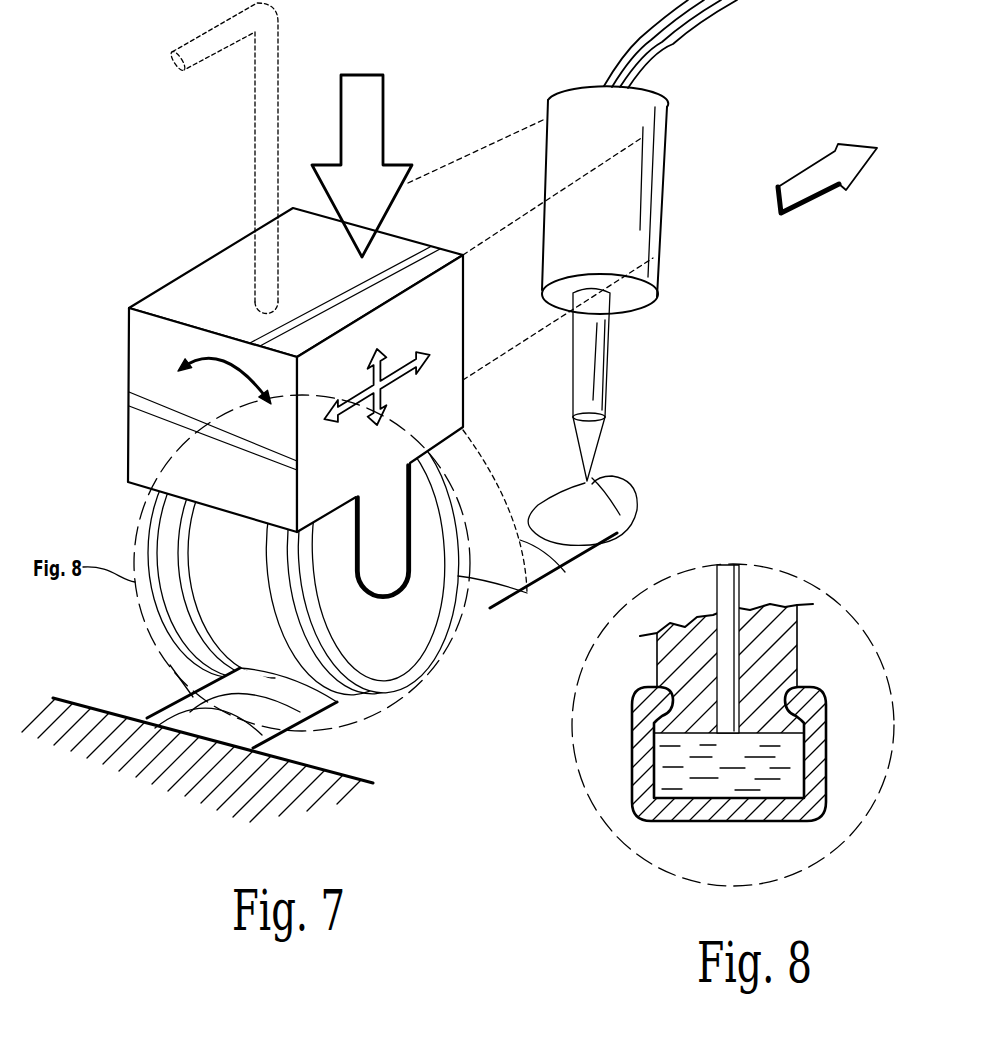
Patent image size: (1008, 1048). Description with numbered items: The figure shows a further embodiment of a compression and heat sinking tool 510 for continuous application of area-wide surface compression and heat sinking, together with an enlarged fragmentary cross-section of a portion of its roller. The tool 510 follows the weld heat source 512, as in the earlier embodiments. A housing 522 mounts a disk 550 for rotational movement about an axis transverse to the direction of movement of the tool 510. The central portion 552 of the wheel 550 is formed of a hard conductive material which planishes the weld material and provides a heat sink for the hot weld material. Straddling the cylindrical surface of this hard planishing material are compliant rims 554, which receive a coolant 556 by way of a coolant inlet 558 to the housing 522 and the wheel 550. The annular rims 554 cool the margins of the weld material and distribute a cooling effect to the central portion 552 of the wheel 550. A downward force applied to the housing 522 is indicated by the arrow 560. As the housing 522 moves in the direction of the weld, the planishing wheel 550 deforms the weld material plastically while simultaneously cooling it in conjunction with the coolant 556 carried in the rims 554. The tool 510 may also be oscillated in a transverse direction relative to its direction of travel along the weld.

In FIG. 7, the compression and heat sinking tool 510 is at (271, 403).
In FIG. 7, the weld heat source 512 is at (660, 222).
In FIG. 7, the housing 522 is at (143, 347).
In FIG. 7, the disk 550 is at (313, 556).
In FIG. 7, the central portion 552 is at (208, 597).
In FIG. 7, the compliant rims 554 is at (353, 700).
In FIG. 8, the compliant rims 554 is at (652, 808).
In FIG. 8, the coolant 556 is at (780, 782).
In FIG. 7, the coolant inlet 558 is at (253, 143).
In FIG. 7, the arrow 560 is at (373, 107).